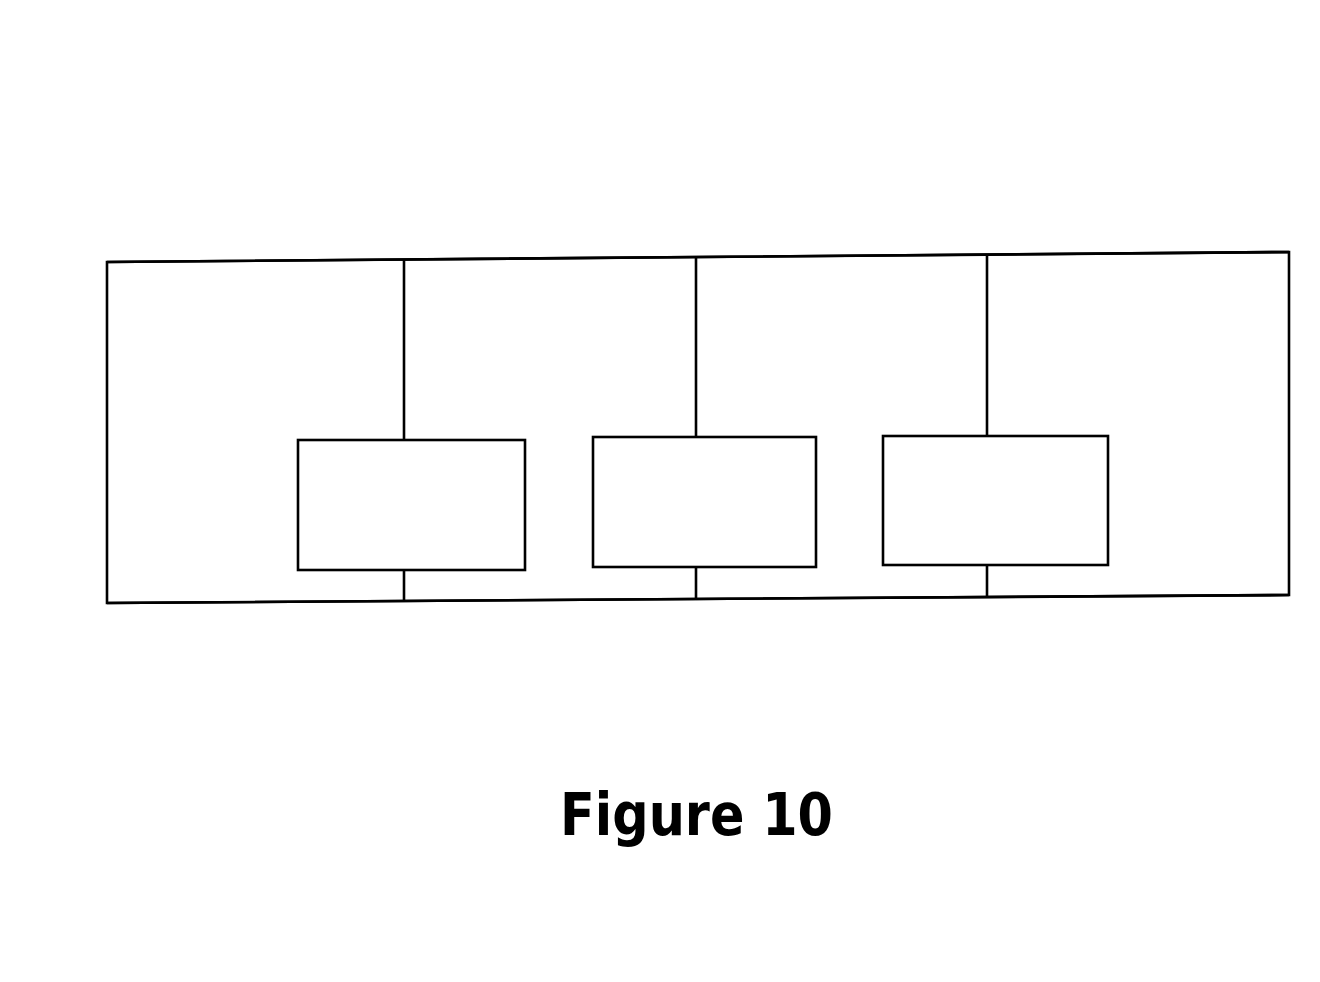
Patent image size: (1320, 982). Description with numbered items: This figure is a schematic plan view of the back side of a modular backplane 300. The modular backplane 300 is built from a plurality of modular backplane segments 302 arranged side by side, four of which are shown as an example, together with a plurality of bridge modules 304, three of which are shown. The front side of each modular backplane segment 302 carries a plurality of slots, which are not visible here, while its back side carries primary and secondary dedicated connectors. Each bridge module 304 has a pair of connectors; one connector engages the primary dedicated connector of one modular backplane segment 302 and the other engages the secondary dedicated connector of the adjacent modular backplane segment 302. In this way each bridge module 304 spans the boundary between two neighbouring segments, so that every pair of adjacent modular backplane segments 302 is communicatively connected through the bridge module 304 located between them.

The modular backplane 300 is at (1258, 93).
The modular backplane segments 302 is at (698, 372).
The bridge modules 304 is at (708, 444).